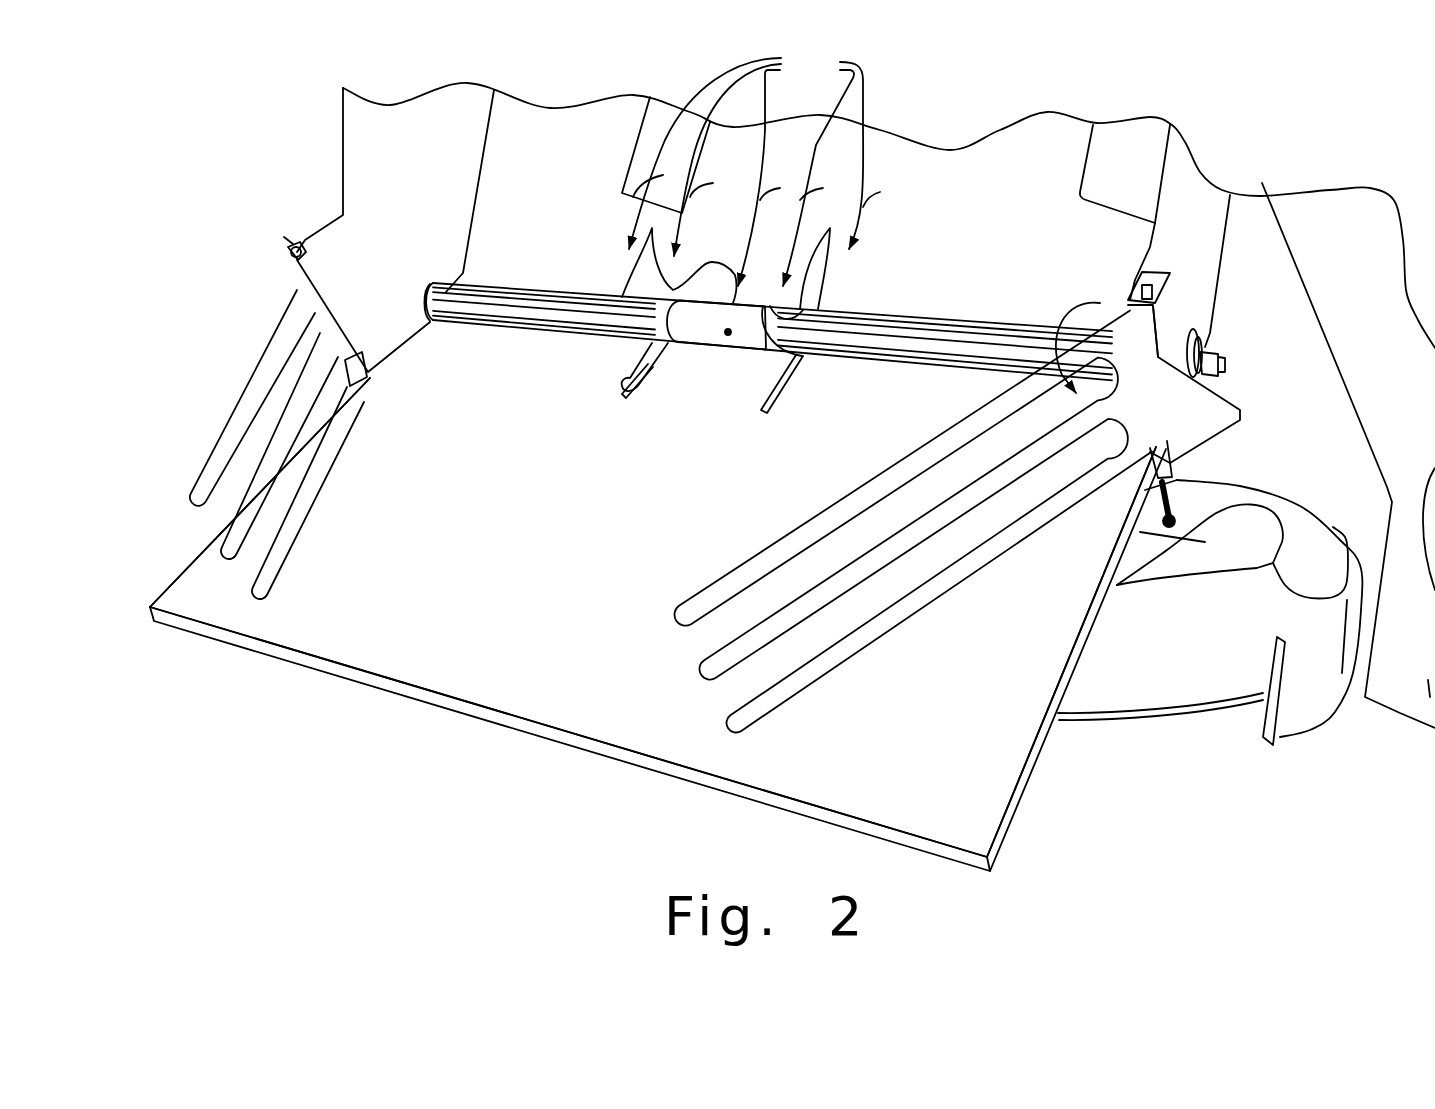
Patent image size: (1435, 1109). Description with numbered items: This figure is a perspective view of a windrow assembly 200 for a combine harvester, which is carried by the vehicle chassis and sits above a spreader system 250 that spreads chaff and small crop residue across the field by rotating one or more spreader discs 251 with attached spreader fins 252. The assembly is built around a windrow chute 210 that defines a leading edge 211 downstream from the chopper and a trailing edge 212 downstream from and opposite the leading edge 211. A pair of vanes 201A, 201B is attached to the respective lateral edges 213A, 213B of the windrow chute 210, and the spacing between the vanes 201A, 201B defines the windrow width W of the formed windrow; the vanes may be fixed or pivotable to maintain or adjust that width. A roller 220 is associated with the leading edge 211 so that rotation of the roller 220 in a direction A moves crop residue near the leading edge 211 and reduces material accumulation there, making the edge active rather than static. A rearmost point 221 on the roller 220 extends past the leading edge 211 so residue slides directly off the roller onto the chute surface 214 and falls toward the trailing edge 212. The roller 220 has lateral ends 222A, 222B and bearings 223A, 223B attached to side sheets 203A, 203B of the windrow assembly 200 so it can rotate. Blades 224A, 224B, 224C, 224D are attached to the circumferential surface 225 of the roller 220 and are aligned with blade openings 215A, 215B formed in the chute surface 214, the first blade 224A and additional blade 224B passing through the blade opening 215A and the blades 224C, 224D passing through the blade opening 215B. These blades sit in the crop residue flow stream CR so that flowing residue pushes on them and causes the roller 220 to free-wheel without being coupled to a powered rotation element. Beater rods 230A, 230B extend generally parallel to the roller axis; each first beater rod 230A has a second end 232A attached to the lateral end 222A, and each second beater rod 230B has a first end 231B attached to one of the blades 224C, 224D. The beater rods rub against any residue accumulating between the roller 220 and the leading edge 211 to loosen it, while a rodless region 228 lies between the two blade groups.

The windrow assembly 200 is at (258, 297).
The vane 201A is at (282, 419).
The vane 201B is at (873, 563).
The side sheet 203A is at (403, 287).
The side sheet 203B is at (1198, 183).
The windrow chute 210 is at (513, 722).
The leading edge 211 is at (553, 332).
The trailing edge 212 is at (360, 672).
The lateral edge 213A is at (172, 586).
The lateral edge 213B is at (1018, 781).
The chute surface 214 is at (560, 580).
The blade opening 215A is at (627, 388).
The blade opening 215B is at (770, 402).
The roller 220 is at (768, 318).
The rearmost point 221 is at (728, 336).
The lateral end 222A is at (381, 398).
The lateral end 222B is at (1243, 400).
The bearing 223A is at (426, 283).
The bearing 223B is at (1205, 335).
The first blade 224A is at (620, 285).
The additional blade 224B is at (648, 382).
The blade 224C is at (820, 278).
The blade 224D is at (792, 358).
The circumferential surface 225 is at (618, 330).
The rodless region 228 is at (694, 330).
The first beater rods 230A is at (527, 318).
The second beater rods 230B is at (986, 360).
The first end 231B is at (845, 326).
The second end 232A is at (478, 294).
The spreader system 250 is at (1210, 682).
The spreader disc 251 is at (1130, 722).
The spreader fin 252 is at (1218, 563).
The direction of rotation A is at (1035, 356).
The crop residue flow stream CR is at (754, 168).
The windrow width W is at (737, 712).